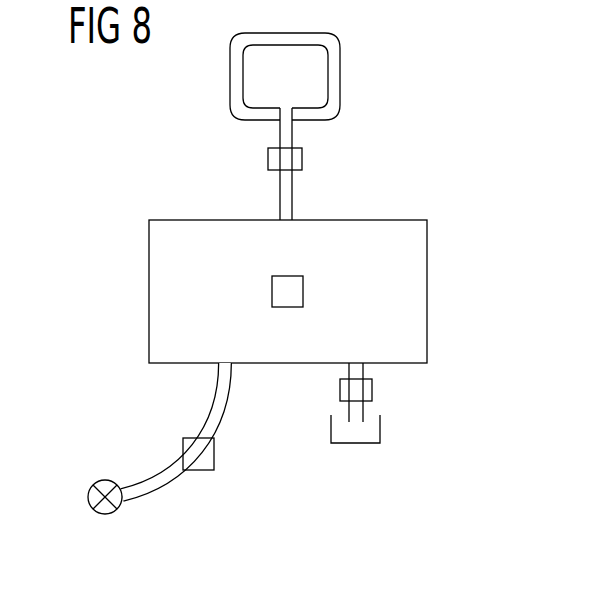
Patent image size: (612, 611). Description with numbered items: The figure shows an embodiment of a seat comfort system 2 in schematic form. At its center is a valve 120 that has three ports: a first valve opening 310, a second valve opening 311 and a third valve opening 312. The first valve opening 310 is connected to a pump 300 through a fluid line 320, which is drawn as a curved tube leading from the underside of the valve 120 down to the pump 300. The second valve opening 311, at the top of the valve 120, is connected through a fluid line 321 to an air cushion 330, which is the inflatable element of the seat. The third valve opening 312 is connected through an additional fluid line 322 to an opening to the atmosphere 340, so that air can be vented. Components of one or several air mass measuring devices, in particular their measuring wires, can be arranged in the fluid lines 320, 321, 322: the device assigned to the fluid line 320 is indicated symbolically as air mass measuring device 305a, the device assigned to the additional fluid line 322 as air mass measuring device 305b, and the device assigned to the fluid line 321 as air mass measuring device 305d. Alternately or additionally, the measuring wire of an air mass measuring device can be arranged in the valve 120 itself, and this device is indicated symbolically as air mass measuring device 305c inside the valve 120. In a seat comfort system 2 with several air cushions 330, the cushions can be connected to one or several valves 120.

The seat comfort system 2 is at (468, 45).
The valve 120 is at (428, 290).
The pump 300 is at (103, 514).
The air mass measuring device 305a is at (232, 458).
The air mass measuring device 305b is at (385, 385).
The air mass measuring device 305c is at (318, 284).
The air mass measuring device 305d is at (318, 156).
The first valve opening 310 is at (200, 380).
The second valve opening 311 is at (265, 210).
The third valve opening 312 is at (335, 376).
The fluid line 320 is at (161, 493).
The fluid line 321 is at (292, 188).
The additional fluid line 322 is at (363, 408).
The air cushion 330 is at (340, 73).
The opening to the atmosphere 340 is at (373, 433).